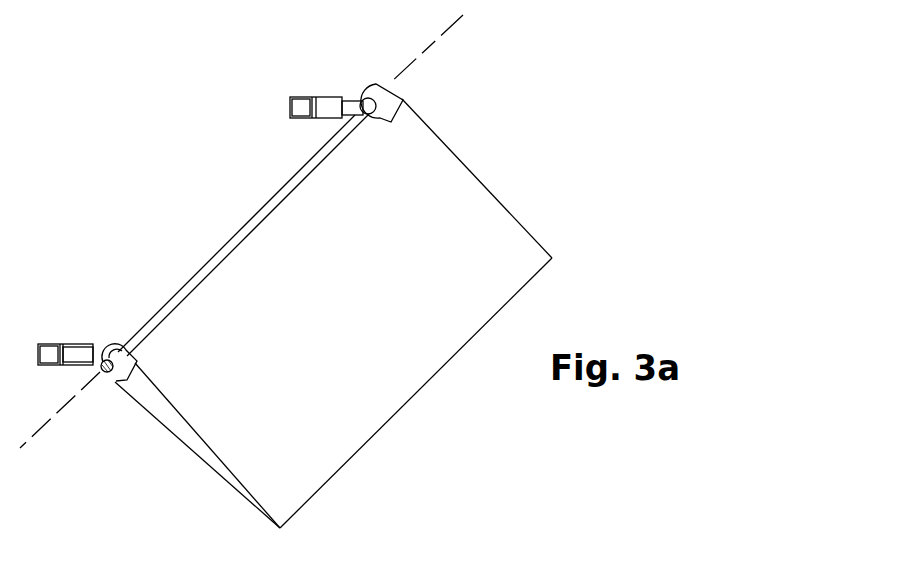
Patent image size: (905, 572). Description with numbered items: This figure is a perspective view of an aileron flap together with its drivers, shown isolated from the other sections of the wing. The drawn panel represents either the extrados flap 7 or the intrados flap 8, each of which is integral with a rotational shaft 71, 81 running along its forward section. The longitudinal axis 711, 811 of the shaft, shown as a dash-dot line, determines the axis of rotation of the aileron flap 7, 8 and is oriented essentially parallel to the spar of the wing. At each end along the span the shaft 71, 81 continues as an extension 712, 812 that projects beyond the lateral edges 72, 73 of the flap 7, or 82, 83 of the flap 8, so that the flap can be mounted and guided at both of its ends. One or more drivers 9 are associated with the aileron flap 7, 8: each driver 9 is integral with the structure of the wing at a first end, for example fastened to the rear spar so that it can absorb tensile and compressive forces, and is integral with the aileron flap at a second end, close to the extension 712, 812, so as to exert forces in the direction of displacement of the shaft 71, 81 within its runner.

The extrados flap 7 is at (355, 327).
The intrados flap 8 is at (355, 327).
The driver 9 is at (328, 108).
The rotational shaft 71 is at (243, 235).
The rotational shaft 81 is at (186, 283).
The lateral edge 72 is at (197, 459).
The lateral edge 82 is at (212, 460).
The lateral edge 73 is at (498, 178).
The lateral edge 83 is at (462, 159).
The longitudinal axis 711 is at (275, 231).
The longitudinal axis 811 is at (465, 17).
The extension 712 is at (232, 248).
The extension 812 is at (383, 79).